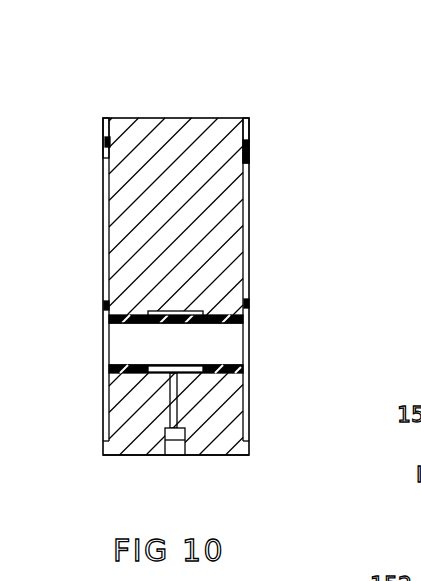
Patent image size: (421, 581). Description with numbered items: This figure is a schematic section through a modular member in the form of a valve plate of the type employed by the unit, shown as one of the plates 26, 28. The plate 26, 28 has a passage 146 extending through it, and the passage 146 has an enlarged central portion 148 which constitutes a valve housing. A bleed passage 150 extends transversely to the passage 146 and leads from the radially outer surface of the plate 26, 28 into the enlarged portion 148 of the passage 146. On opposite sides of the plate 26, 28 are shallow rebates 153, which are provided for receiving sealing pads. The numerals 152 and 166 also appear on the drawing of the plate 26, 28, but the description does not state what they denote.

The plate 26 is at (210, 99).
The plate 28 is at (176, 414).
The passage 146 is at (108, 275).
The enlarged central portion 148 is at (193, 310).
The bleed passage 150 is at (178, 408).
The bottom wall 152 is at (218, 457).
The shallow rebates 153 is at (107, 139).
The gap / spacer 166 is at (244, 328).